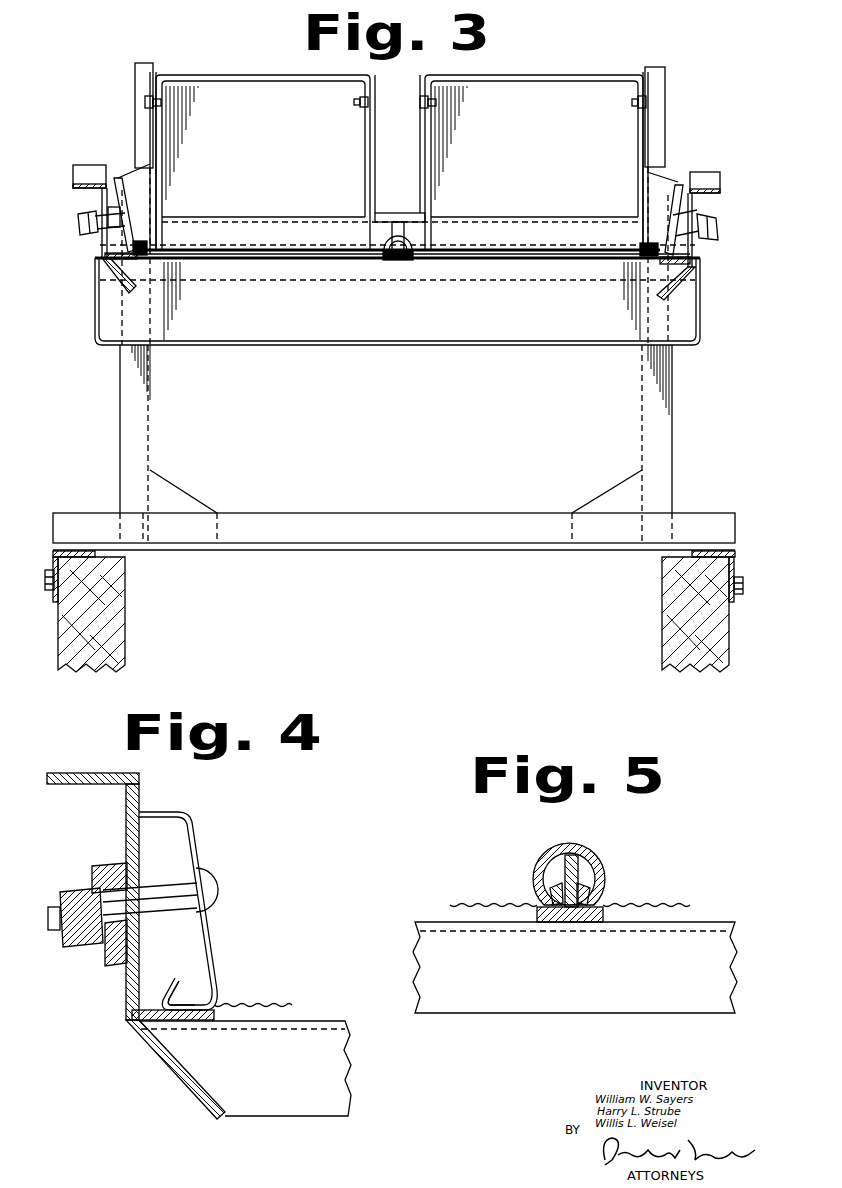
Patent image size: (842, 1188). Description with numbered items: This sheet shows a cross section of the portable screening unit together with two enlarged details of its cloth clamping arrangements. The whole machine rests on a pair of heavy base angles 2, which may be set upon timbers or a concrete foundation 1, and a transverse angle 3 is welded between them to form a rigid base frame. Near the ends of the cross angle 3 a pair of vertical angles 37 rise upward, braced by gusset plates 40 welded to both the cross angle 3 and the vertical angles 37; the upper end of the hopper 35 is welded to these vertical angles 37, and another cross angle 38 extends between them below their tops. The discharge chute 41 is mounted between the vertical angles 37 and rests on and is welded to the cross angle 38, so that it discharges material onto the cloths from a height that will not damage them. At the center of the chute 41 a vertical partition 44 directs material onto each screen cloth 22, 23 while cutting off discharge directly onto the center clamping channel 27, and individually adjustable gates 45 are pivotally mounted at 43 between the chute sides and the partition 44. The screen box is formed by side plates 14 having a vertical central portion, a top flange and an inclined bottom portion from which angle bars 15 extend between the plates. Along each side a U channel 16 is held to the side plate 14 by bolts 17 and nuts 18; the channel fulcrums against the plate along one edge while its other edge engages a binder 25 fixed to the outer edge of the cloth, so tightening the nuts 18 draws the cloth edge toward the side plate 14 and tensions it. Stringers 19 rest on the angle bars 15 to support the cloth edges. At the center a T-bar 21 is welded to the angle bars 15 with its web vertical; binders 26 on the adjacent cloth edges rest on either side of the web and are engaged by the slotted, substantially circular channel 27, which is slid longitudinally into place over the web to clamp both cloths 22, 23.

In FIG. 3, the foundation 1 is at (120, 602).
In FIG. 3, the base angles 2 is at (45, 572).
In FIG. 3, the transverse angle 3 is at (262, 550).
In FIG. 3, the side plates 14 is at (88, 167).
In FIG. 4, the side plates 14 is at (141, 797).
In FIG. 3, the angle bars 15 is at (318, 282).
In FIG. 4, the angle bars 15 is at (272, 1116).
In FIG. 5, the angle bars 15 is at (510, 1013).
In FIG. 3, the U channels 16 is at (118, 178).
In FIG. 4, the U channels 16 is at (195, 838).
In FIG. 3, the bolts 17 is at (122, 218).
In FIG. 4, the bolts 17 is at (166, 908).
In FIG. 3, the nuts 18 is at (80, 228).
In FIG. 4, the nuts 18 is at (80, 940).
In FIG. 3, the stringers 19 is at (138, 260).
In FIG. 4, the stringers 19 is at (214, 1020).
In FIG. 3, the T-bar 21 is at (396, 262).
In FIG. 5, the T-bar 21 is at (578, 877).
In FIG. 3, the screen cloth 22 is at (236, 260).
In FIG. 5, the screen cloth 22 is at (494, 905).
In FIG. 3, the screen cloth 23 is at (508, 260).
In FIG. 4, the screen cloth 23 is at (280, 1004).
In FIG. 5, the screen cloth 23 is at (678, 905).
In FIG. 4, the binder 25 is at (183, 992).
In FIG. 5, the binders 26 is at (550, 887).
In FIG. 3, the channel 27 is at (415, 242).
In FIG. 5, the channel 27 is at (590, 850).
In FIG. 3, the hopper 35 is at (353, 347).
In FIG. 3, the vertical angles 37 is at (135, 90).
In FIG. 3, the cross angle 38 is at (548, 222).
In FIG. 3, the gusset plates 40 is at (188, 497).
In FIG. 3, the discharge chute 41 is at (156, 74).
In FIG. 3, the pivot 43 is at (163, 103).
In FIG. 3, the partition 44 is at (427, 74).
In FIG. 3, the gates 45 is at (270, 66).